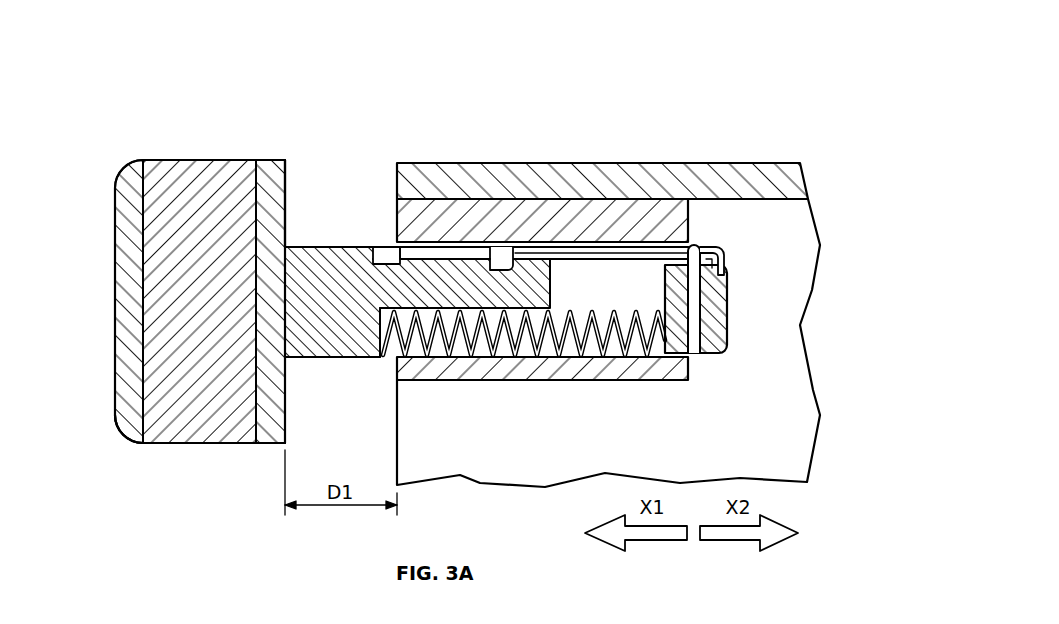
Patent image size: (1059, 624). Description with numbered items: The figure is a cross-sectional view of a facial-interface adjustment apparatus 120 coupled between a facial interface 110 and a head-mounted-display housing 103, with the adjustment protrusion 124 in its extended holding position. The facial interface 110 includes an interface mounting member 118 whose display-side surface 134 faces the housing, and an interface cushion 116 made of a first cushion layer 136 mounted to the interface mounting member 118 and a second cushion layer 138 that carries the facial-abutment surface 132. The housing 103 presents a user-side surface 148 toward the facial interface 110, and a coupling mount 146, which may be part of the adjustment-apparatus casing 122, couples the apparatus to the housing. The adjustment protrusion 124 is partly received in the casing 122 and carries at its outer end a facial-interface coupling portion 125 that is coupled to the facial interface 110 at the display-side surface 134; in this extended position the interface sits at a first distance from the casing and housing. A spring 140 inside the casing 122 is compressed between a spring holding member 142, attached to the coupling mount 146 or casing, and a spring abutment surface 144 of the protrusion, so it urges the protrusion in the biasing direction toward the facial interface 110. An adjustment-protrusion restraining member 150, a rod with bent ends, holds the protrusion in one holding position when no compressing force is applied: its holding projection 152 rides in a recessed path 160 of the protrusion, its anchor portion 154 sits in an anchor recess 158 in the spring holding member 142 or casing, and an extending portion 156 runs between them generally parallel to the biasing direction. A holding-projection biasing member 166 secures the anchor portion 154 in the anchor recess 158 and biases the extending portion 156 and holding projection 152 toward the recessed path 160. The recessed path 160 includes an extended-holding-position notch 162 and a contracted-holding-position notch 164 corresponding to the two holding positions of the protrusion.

The head-mounted-display housing 103 is at (790, 176).
The facial interface 110 is at (130, 163).
The interface cushion 116 is at (186, 174).
The interface mounting member 118 is at (265, 170).
The facial-interface adjustment apparatus 120 is at (198, 257).
The adjustment-apparatus casing 122 is at (538, 377).
The adjustment protrusion 124 is at (320, 246).
The facial-interface coupling portion 125 is at (283, 340).
The facial-abutment surface 132 is at (115, 282).
The display-side surface 134 is at (288, 183).
The first cushion layer 136 is at (194, 432).
The second cushion layer 138 is at (132, 423).
The spring 140 is at (622, 378).
The spring holding member 142 is at (688, 340).
The spring abutment surface 144 is at (386, 362).
The coupling mount 146 is at (560, 222).
The user-side surface 148 is at (397, 185).
The adjustment-protrusion restraining member 150 is at (645, 245).
The holding projection 152 is at (508, 256).
The anchor portion 154 is at (726, 268).
The extending portion 156 is at (606, 247).
The anchor recess 158 is at (724, 253).
The recessed path 160 is at (384, 248).
The extended-holding-position notch 162 is at (498, 257).
The contracted-holding-position notch 164 is at (405, 252).
The holding-projection biasing member 166 is at (698, 250).